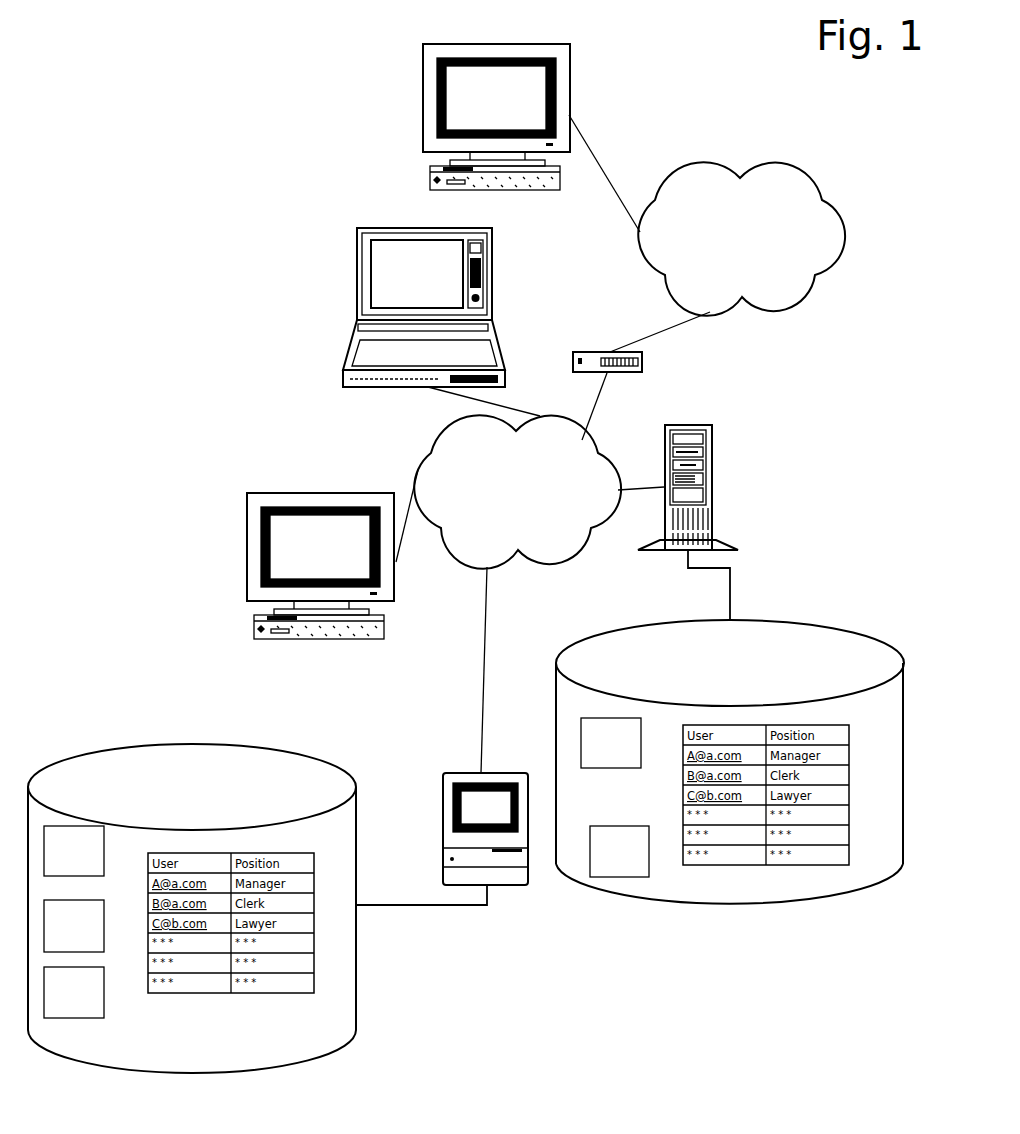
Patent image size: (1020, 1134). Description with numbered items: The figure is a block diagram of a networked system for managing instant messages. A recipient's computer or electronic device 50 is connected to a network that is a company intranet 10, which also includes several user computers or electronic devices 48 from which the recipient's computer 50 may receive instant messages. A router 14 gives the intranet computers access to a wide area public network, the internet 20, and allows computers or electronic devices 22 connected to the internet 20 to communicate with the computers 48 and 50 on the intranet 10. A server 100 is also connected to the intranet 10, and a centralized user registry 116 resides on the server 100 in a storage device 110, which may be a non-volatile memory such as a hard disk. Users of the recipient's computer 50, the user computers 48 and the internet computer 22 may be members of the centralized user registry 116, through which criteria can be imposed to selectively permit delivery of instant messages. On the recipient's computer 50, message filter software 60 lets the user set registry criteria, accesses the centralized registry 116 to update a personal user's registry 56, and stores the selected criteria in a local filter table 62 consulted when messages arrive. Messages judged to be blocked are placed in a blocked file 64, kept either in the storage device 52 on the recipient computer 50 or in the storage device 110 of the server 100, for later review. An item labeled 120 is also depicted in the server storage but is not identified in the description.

The intranet 10 is at (517, 492).
The router 14 is at (630, 372).
The internet 20 is at (741, 239).
The computer or electronic device 22 is at (538, 190).
The user computer or electronic device 48 is at (397, 387).
The recipient's computer or electronic device 50 is at (518, 885).
The storage device 52 is at (223, 908).
The personal user's registry 56 is at (147, 965).
The message filter software 60 is at (74, 851).
The local filter table 62 is at (74, 926).
The blocked file 64 is at (346, 922).
The server 100 is at (672, 551).
The storage device 110 is at (720, 746).
The centralized user registry 116 is at (682, 773).
The module 120 is at (611, 743).